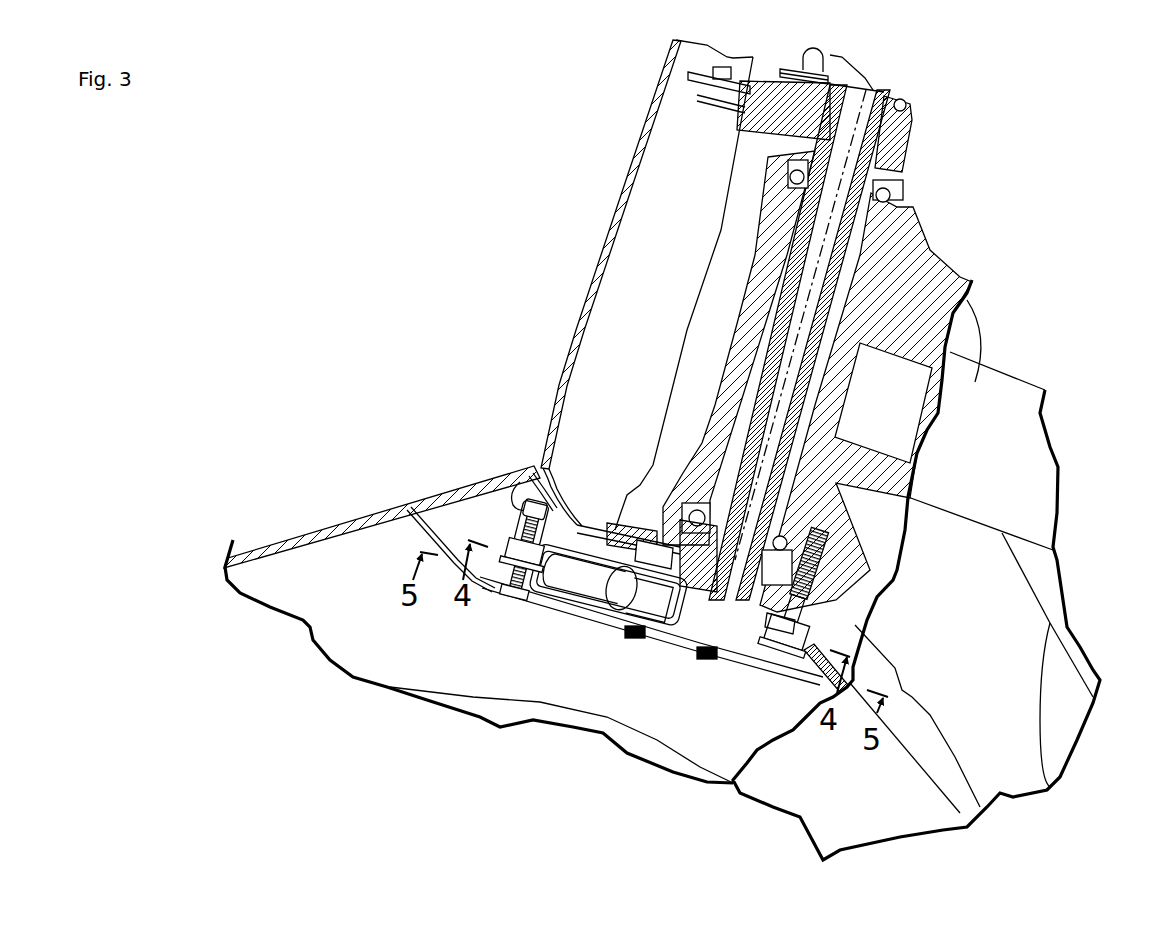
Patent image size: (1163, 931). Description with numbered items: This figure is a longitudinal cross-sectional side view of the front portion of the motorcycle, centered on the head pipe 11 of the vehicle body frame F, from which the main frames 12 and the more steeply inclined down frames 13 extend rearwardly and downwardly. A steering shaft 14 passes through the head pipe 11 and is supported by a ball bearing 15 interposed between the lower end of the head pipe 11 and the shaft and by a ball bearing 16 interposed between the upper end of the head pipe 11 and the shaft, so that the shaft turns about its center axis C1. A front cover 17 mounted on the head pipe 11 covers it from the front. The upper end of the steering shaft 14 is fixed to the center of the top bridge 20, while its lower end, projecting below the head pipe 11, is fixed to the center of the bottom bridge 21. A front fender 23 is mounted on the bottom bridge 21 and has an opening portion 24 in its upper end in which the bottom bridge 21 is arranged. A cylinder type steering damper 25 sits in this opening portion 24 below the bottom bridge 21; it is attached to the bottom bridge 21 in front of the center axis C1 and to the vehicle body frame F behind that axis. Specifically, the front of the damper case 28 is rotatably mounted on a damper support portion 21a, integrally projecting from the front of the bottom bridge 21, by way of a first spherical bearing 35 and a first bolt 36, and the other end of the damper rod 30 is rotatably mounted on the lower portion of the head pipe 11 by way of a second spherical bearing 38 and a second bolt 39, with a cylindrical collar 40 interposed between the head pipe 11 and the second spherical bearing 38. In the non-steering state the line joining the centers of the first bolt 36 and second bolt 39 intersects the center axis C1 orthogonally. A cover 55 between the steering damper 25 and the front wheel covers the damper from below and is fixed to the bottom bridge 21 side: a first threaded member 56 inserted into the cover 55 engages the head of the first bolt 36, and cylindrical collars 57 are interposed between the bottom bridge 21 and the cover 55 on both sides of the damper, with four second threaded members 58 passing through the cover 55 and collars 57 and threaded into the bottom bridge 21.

The head pipe 11 is at (927, 250).
The main frames 12 is at (983, 387).
The down frames 13 is at (1008, 607).
The steering shaft 14 is at (752, 388).
The ball bearing 15 is at (695, 512).
The ball bearing 16 is at (897, 193).
The front cover 17 is at (610, 210).
The top bridge 20 is at (901, 138).
The bottom bridge 21 is at (620, 530).
The damper support portion 21a is at (520, 508).
The front fender 23 is at (375, 508).
The opening portion 24 is at (545, 462).
The cylinder type steering damper 25 is at (583, 553).
The damper case 28 is at (600, 610).
The damper rod 30 is at (694, 612).
The first spherical bearing 35 is at (513, 547).
The first bolt 36 is at (497, 510).
The second spherical bearing 38 is at (807, 638).
The second bolt 39 is at (782, 672).
The cylindrical collar 40 is at (827, 588).
The cover 55 is at (580, 607).
The first threaded member 56 is at (512, 607).
The cylindrical collars 57 is at (733, 640).
The second threaded members 58 is at (633, 632).
The center axis C1 is at (787, 383).
The vehicle body frame F is at (1025, 377).